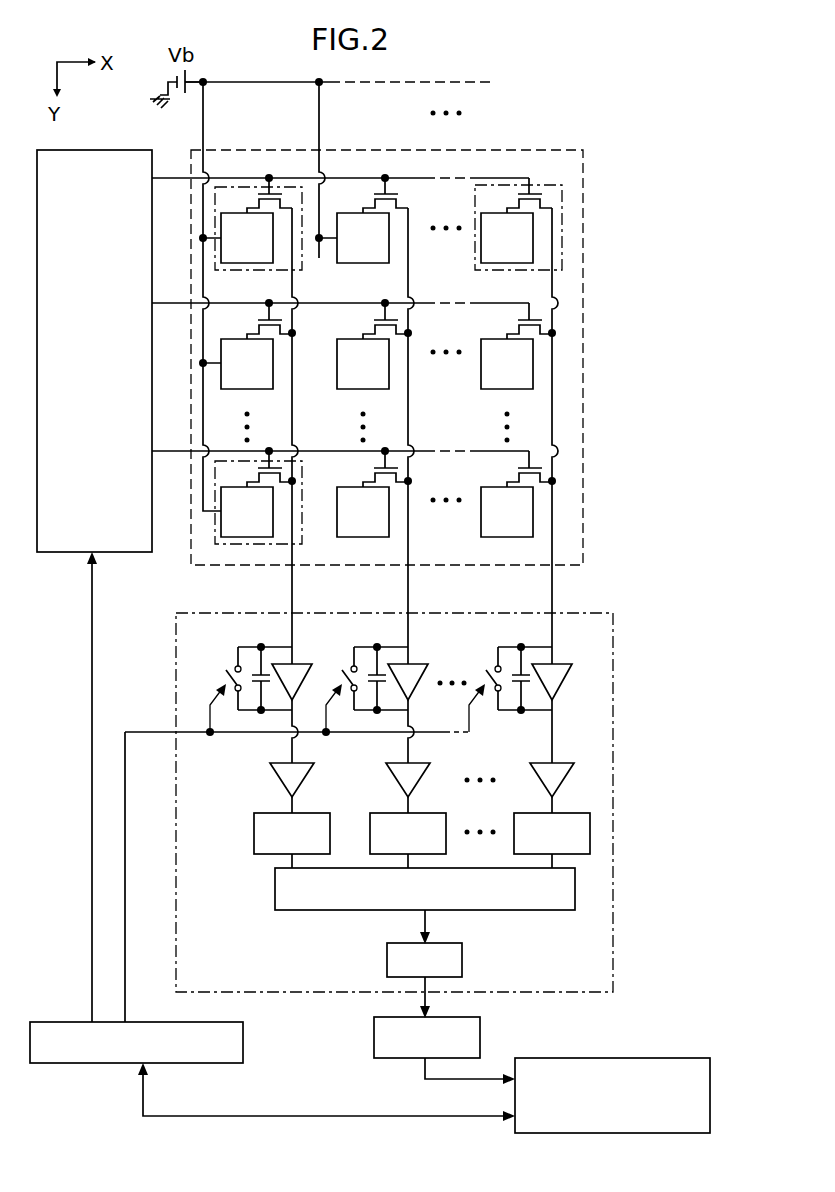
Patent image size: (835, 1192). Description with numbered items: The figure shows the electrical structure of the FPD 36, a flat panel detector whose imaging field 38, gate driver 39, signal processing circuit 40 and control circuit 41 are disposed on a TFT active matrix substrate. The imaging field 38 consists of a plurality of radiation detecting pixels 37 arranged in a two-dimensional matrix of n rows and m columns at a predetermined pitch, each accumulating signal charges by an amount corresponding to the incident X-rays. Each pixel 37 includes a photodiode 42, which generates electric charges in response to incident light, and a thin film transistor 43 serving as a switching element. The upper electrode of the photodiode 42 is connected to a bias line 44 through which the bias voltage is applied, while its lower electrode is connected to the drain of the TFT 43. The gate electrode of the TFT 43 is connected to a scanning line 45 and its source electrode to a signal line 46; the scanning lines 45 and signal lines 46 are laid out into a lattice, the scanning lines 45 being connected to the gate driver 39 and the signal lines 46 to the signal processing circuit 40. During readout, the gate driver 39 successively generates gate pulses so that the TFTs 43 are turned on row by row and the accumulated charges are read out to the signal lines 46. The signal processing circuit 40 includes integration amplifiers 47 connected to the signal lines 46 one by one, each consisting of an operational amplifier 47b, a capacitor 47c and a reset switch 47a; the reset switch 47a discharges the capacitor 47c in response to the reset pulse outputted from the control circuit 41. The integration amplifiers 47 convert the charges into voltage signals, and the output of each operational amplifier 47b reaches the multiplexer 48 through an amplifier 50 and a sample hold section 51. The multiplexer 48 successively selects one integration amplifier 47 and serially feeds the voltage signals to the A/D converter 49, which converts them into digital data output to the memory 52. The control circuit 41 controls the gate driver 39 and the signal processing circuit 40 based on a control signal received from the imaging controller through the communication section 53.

The FPD 36 is at (576, 113).
The radiation detecting pixel 37 is at (417, 357).
The imaging field 38 is at (513, 150).
The gate driver 39 is at (133, 150).
The signal processing circuit 40 is at (613, 718).
The control circuit 41 is at (245, 1040).
The photodiode 42 is at (273, 250).
The thin film transistor 43 is at (265, 182).
The bias line 44 is at (205, 94).
The scanning line 45 is at (172, 178).
The signal line 46 is at (292, 592).
The integration amplifier 47 is at (428, 678).
The reset switch 47a is at (236, 668).
The operational amplifier 47b is at (568, 672).
The capacitor 47c is at (500, 638).
The multiplexer 48 is at (275, 888).
The A/D converter 49 is at (462, 958).
The amplifier 50 is at (280, 778).
The sample hold section 51 is at (254, 834).
The memory 52 is at (482, 1038).
The communication section 53 is at (575, 1058).